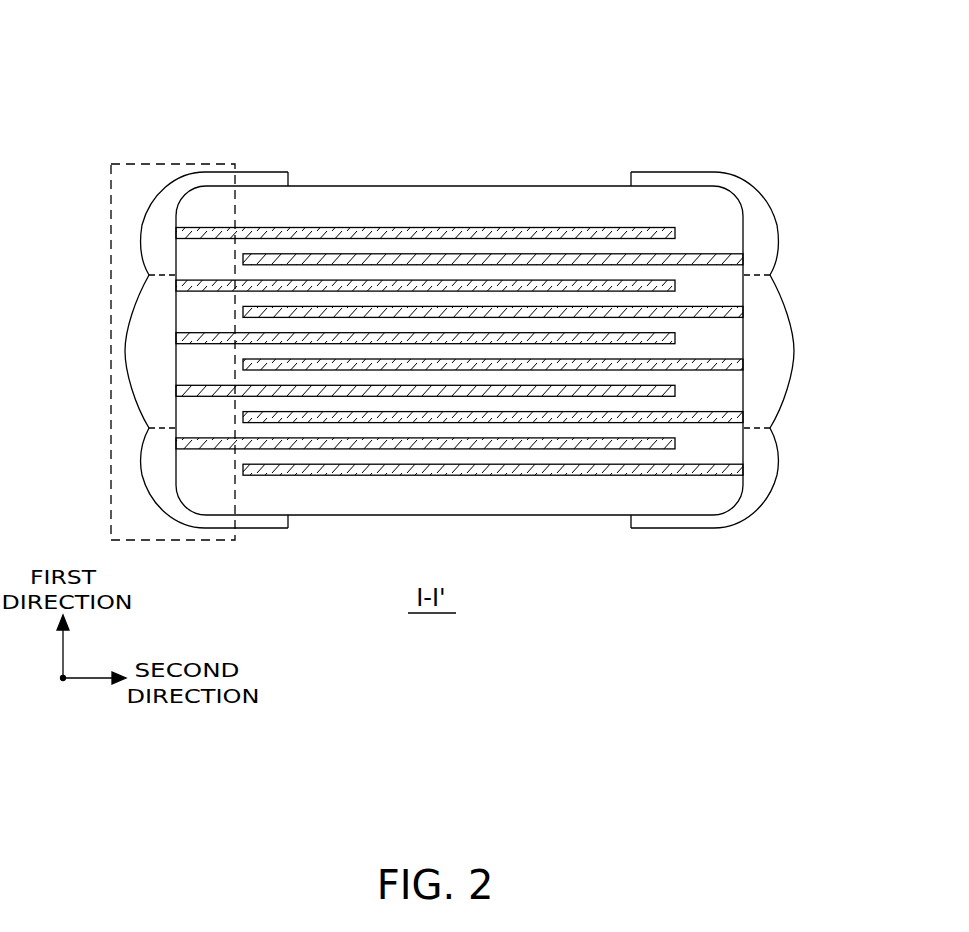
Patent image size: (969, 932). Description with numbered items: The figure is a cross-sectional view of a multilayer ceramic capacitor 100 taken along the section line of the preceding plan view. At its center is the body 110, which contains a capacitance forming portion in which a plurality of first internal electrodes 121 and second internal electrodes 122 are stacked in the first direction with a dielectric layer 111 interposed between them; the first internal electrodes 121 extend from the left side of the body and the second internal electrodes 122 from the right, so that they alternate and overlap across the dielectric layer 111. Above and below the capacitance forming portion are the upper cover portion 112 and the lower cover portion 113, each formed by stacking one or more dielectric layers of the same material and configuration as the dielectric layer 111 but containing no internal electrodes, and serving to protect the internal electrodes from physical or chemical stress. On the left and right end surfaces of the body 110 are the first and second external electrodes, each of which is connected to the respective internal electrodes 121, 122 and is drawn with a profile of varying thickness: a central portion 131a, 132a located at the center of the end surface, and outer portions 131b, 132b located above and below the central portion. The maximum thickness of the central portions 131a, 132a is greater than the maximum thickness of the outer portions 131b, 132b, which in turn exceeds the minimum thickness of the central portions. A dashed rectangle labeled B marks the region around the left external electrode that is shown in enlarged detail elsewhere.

The multilayer ceramic capacitor 100 is at (155, 46).
The body 110 is at (542, 186).
The dielectric layer 111 is at (398, 272).
The upper cover portion 112 is at (489, 208).
The lower cover portion 113 is at (557, 505).
The first internal electrode 121 is at (317, 280).
The second internal electrode 122 is at (352, 312).
The central portion of first external electrode 131a is at (142, 350).
The outer portion of first external electrode 131b is at (142, 233).
The central portion of second external electrode 132a is at (772, 353).
The outer portion of second external electrode 132b is at (773, 233).
The enlarged region B is at (202, 163).